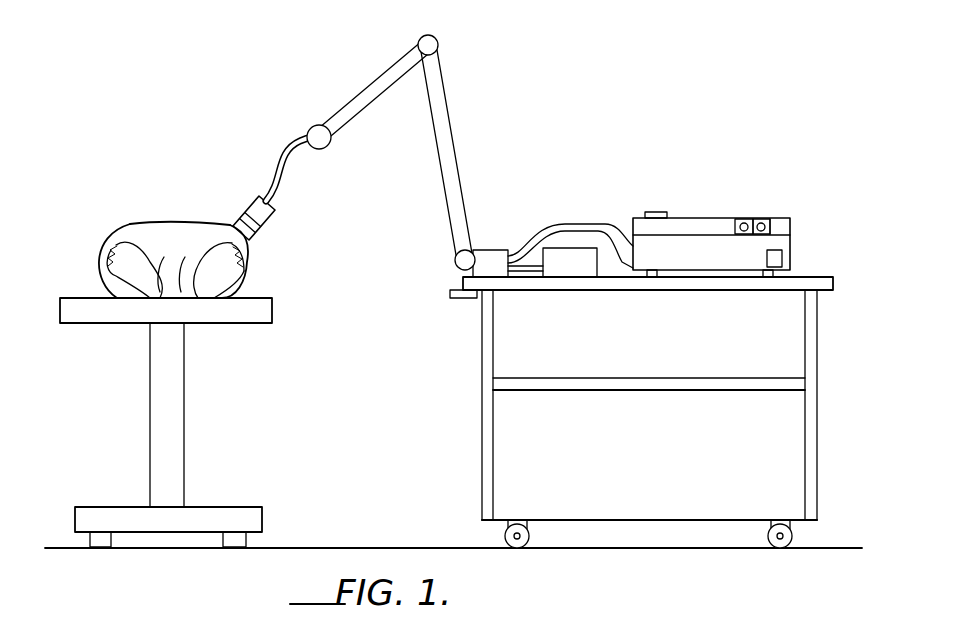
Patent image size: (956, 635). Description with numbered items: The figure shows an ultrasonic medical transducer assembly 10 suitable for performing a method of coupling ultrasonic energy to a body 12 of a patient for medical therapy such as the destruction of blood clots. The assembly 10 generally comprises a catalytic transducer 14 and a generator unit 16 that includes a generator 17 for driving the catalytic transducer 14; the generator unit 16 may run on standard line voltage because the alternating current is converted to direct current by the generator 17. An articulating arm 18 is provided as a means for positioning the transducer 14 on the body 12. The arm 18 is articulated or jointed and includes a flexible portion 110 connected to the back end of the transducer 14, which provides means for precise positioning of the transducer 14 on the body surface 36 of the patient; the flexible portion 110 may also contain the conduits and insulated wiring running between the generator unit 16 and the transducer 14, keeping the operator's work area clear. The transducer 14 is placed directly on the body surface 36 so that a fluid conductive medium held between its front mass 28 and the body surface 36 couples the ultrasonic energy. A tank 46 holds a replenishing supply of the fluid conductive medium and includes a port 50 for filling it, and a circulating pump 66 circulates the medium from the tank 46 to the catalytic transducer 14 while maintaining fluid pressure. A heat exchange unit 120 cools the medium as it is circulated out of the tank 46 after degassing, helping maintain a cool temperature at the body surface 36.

The ultrasonic medical transducer assembly 10 is at (575, 108).
The body 12 is at (107, 216).
The catalytic transducer 14 is at (267, 201).
The generator unit 16 is at (711, 244).
The generator 17 is at (707, 260).
The articulating arm 18 is at (450, 78).
The front mass 28 is at (263, 226).
The body surface 36 is at (203, 222).
The tank 46 is at (729, 214).
The port 50 is at (657, 210).
The circulating pump 66 is at (633, 217).
The flexible portion 110 is at (280, 147).
The heat exchange unit 120 is at (570, 271).